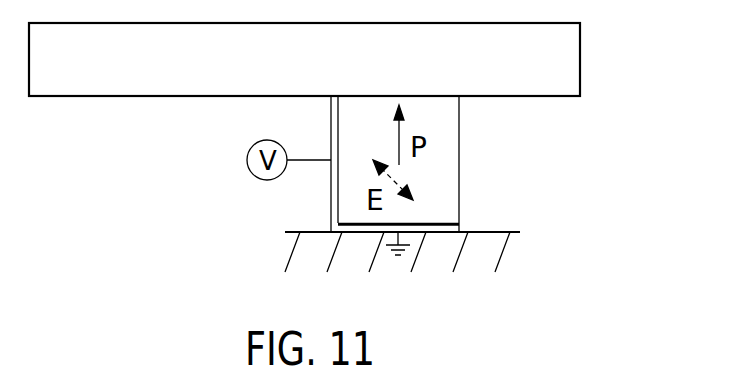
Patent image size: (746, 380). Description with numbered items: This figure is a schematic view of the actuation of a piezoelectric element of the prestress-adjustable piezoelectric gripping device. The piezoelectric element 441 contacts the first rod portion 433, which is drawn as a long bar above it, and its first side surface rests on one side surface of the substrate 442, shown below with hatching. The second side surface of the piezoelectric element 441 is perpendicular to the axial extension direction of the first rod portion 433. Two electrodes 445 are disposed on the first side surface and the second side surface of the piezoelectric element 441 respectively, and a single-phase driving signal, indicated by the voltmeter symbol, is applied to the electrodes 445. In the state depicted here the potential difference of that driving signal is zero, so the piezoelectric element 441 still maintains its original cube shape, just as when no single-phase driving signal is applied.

The first rod portion 433 is at (557, 61).
The piezoelectric element 441 is at (448, 162).
The substrate 442 is at (301, 255).
The electrodes 445 is at (334, 203).